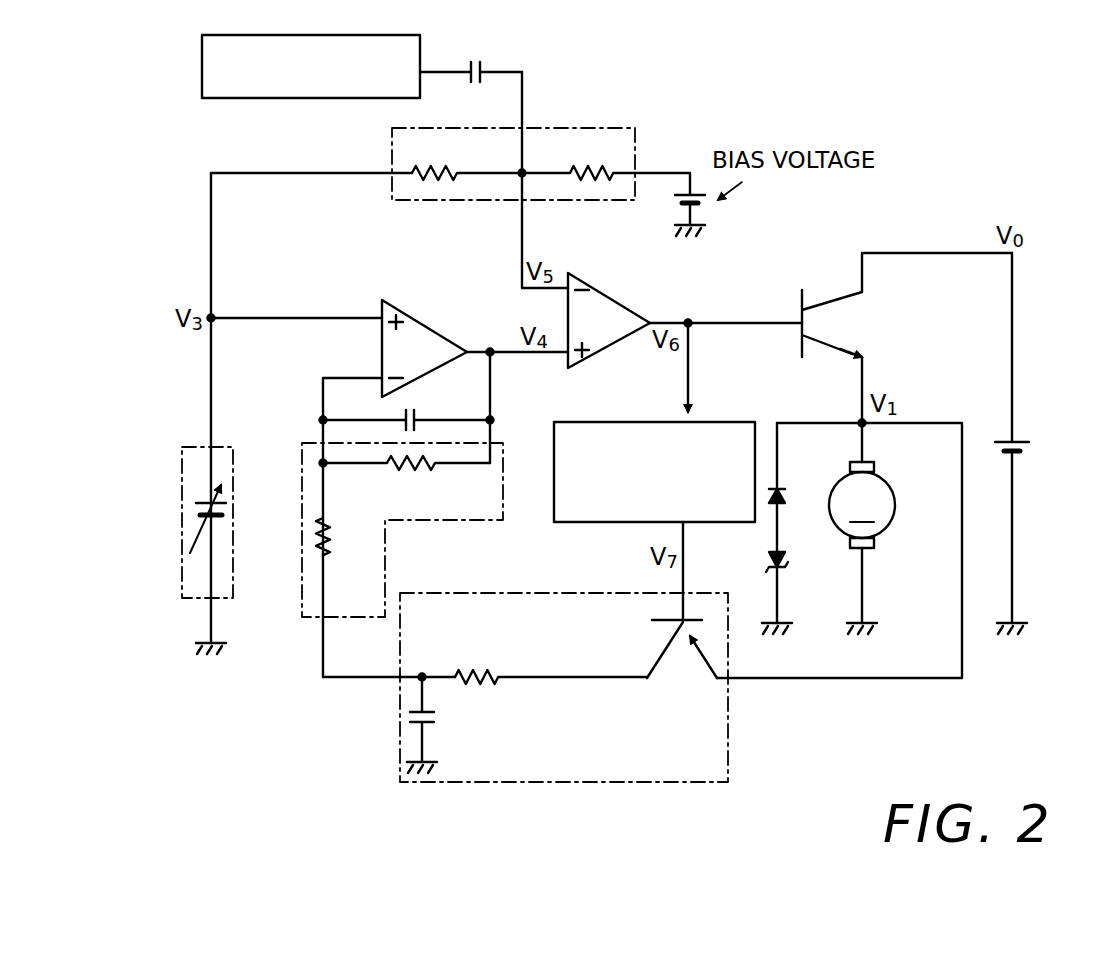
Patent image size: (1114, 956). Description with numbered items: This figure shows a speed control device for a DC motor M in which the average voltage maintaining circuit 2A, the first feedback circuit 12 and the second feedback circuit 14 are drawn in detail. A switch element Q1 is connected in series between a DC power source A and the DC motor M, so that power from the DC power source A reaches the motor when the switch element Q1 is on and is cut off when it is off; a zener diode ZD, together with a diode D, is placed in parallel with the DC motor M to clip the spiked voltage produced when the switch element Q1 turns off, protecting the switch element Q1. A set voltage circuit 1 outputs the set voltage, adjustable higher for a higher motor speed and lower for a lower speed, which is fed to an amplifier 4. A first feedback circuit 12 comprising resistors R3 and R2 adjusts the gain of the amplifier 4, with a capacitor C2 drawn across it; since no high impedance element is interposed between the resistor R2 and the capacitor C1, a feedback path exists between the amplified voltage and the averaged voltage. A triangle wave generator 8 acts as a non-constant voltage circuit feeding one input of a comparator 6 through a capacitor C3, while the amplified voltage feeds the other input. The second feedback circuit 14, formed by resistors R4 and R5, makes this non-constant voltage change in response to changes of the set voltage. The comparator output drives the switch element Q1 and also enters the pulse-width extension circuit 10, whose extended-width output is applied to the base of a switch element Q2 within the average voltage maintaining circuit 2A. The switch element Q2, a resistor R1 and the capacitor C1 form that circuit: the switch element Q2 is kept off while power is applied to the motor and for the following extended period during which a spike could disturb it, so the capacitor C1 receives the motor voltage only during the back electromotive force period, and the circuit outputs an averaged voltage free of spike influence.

The set voltage circuit 1 is at (233, 578).
The amplifier 4 is at (437, 342).
The comparator 6 is at (598, 305).
The triangle wave generator 8 is at (230, 99).
The pulse-width extension circuit 10 is at (723, 422).
The first feedback circuit 12 is at (445, 496).
The second feedback circuit 14 is at (579, 133).
The average voltage maintaining circuit 2A is at (559, 721).
The switch element Q1 is at (810, 296).
The switch element Q2 is at (682, 667).
The DC power source A is at (1034, 458).
The DC motor M is at (890, 523).
The diode D is at (791, 523).
The zener diode ZD is at (799, 565).
The resistor R1 is at (551, 662).
The resistor R2 is at (343, 536).
The resistor R3 is at (406, 481).
The resistor R4 is at (467, 159).
The resistor R5 is at (606, 159).
The capacitor C1 is at (440, 725).
The capacitor C2 is at (406, 407).
The capacitor C3 is at (471, 56).